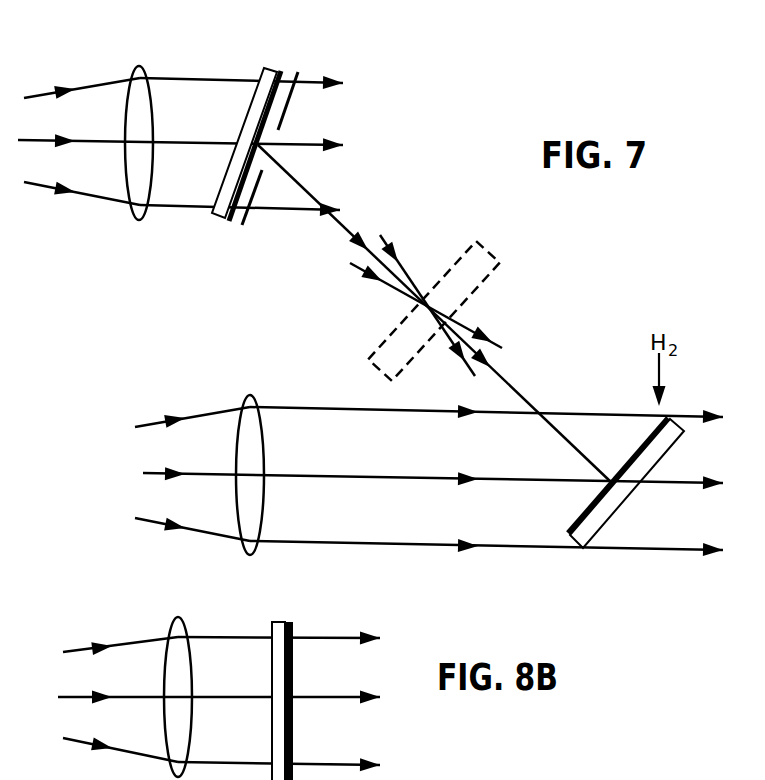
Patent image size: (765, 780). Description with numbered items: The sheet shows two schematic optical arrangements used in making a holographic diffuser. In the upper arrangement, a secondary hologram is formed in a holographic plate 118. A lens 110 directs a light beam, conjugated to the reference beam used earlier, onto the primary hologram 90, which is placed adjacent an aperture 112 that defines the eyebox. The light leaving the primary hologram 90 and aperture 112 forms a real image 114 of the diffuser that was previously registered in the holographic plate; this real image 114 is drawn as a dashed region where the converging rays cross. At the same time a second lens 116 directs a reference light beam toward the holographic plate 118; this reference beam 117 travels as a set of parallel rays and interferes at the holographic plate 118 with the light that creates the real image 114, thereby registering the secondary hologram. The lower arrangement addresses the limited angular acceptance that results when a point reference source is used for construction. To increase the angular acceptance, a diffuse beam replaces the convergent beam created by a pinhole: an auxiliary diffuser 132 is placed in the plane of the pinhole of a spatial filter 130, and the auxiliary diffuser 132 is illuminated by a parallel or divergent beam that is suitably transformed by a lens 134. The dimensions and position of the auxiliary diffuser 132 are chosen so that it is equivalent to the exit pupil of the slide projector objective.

In FIG. 7, the lens 110 is at (142, 66).
In FIG. 7, the primary hologram 90 is at (272, 66).
In FIG. 7, the aperture 112 is at (292, 104).
In FIG. 7, the real image 114 is at (481, 247).
In FIG. 7, the lens 116 is at (248, 395).
In FIG. 7, the reference beam 117 is at (330, 390).
In FIG. 7, the holographic plate 118 is at (590, 537).
In FIG. 8B, the auxiliary diffuser 132 is at (286, 620).
In FIG. 8B, the lens 134 is at (170, 628).
In FIG. 8B, the spatial filter 130 is at (58, 775).